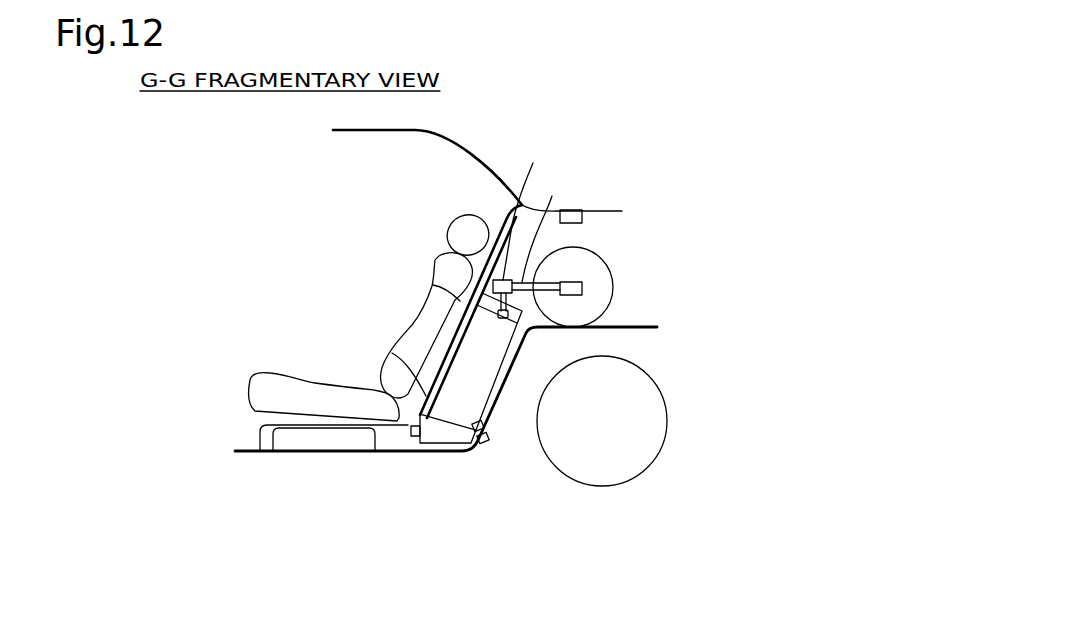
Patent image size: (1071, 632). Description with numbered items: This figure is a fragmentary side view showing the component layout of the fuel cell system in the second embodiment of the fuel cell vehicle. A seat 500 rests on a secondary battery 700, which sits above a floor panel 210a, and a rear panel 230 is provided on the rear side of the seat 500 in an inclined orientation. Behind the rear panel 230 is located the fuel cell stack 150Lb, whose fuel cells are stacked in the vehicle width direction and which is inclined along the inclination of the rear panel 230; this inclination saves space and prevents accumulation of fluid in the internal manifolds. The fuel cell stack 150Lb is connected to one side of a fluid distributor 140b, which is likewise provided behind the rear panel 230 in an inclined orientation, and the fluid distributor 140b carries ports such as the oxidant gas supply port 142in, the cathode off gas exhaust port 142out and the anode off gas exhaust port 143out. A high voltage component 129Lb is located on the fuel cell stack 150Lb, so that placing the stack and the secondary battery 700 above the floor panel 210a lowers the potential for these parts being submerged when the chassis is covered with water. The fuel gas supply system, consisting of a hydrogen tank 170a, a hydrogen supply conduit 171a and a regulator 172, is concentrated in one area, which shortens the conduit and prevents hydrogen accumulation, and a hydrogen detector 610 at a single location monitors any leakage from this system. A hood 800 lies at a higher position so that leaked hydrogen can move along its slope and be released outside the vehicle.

The rear panel 230 is at (507, 214).
The regulator 172 is at (522, 228).
The hydrogen supply conduit 171a is at (557, 227).
The hydrogen detector 610 is at (582, 217).
The hydrogen tank 170a is at (613, 292).
The hood 800 is at (667, 430).
The floor panel 210a is at (247, 453).
The seat 500 is at (410, 323).
The high voltage component 129Lb is at (433, 285).
The fuel cell stack 150Lb is at (392, 353).
The fluid distributor 140b is at (435, 260).
The secondary battery 700 is at (259, 443).
The oxidant gas supply port 142in is at (413, 437).
The cathode off gas exhaust port 142out is at (487, 429).
The anode off gas exhaust port 143out is at (484, 442).